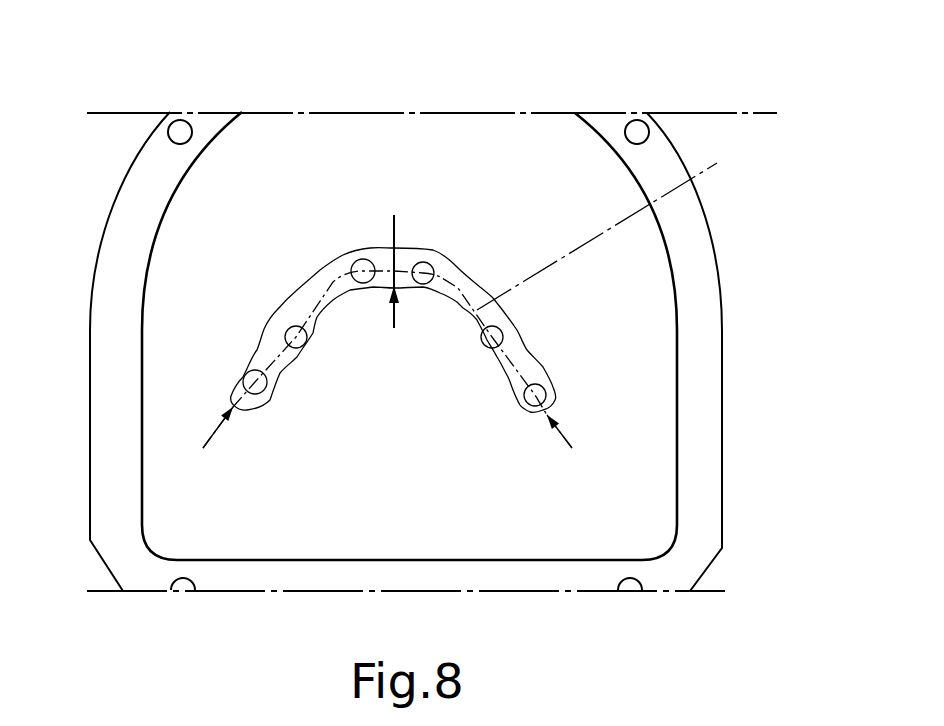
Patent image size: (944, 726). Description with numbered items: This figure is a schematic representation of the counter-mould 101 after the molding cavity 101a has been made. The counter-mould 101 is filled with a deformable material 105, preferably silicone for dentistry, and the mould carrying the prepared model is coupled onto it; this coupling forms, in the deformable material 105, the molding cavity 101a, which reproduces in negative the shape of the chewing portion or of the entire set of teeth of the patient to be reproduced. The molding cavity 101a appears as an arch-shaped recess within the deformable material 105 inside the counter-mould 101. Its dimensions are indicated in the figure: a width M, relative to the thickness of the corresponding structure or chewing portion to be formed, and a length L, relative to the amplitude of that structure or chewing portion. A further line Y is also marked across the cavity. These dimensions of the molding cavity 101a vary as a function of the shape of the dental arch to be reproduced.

The counter-mould 101 is at (680, 142).
The molding cavity 101a is at (313, 272).
The deformable material 105 is at (633, 273).
The length L is at (567, 433).
The Y axis line Y is at (607, 228).
The width M is at (397, 315).